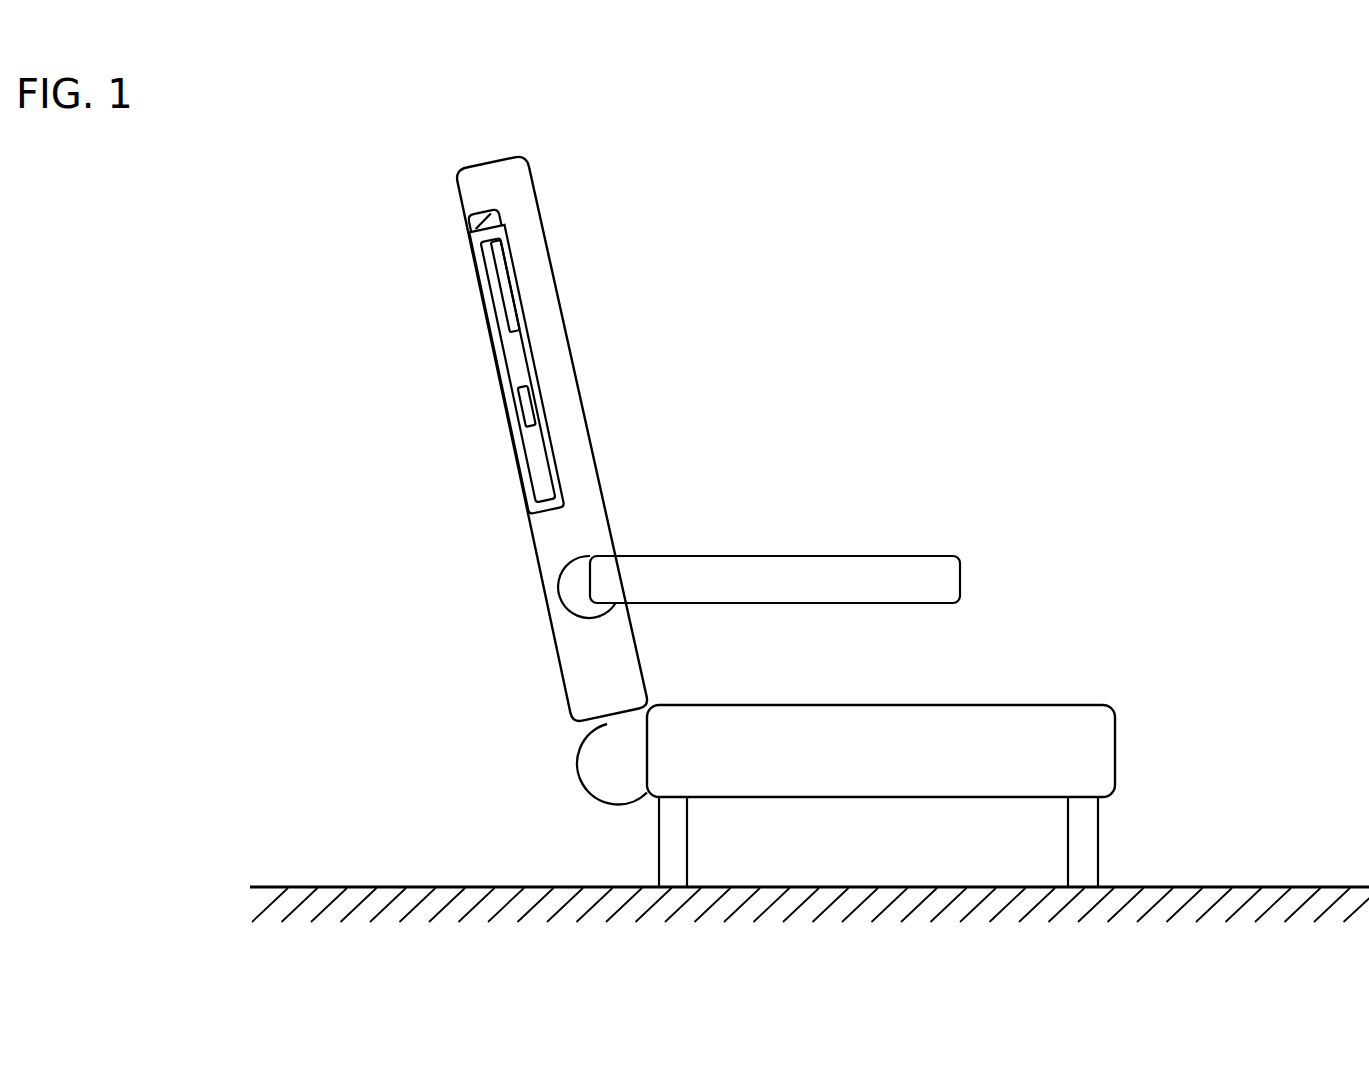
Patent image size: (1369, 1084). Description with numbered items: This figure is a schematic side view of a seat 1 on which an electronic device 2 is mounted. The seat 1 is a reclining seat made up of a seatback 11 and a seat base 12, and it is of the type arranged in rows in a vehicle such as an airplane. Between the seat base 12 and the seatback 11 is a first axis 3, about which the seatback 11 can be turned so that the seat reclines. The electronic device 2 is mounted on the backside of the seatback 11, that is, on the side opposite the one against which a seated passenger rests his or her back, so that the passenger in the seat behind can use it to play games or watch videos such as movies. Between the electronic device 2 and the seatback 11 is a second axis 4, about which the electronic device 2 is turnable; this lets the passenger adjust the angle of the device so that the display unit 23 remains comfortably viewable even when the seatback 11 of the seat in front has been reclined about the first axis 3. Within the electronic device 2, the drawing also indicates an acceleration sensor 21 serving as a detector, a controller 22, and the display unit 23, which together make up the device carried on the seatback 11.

The seat 1 is at (597, 143).
The seatback 11 is at (527, 223).
The seat base 12 is at (1068, 720).
The electronic device 2 is at (440, 369).
The acceleration sensor 21 is at (469, 433).
The controller 22 is at (502, 255).
The display unit 23 is at (488, 331).
The first axis 3 is at (618, 765).
The second axis 4 is at (468, 221).